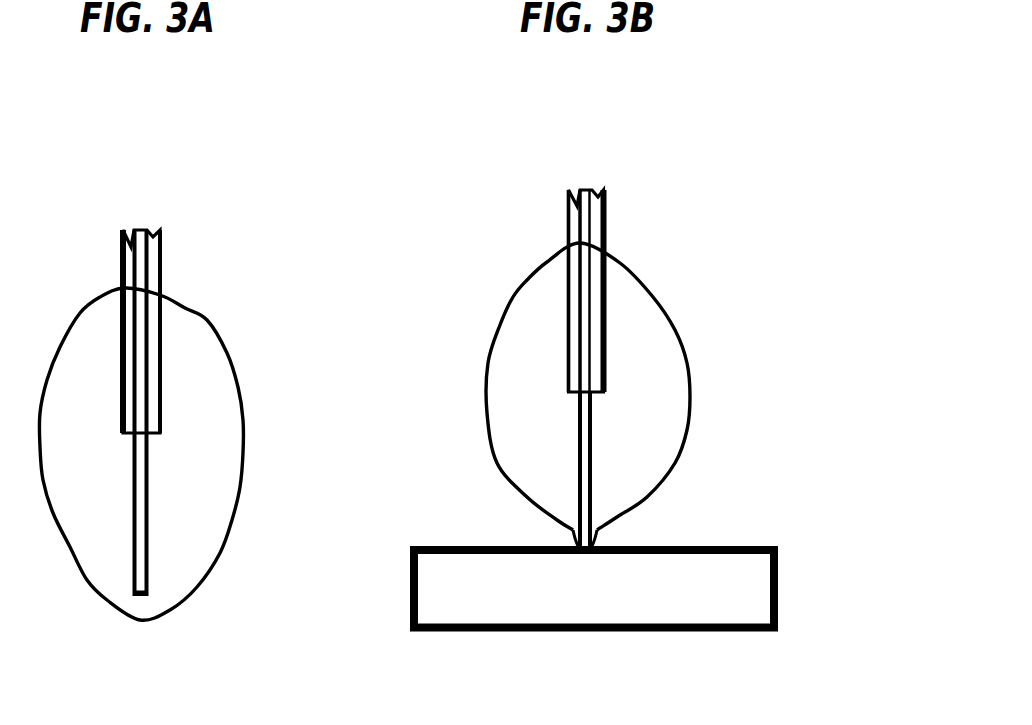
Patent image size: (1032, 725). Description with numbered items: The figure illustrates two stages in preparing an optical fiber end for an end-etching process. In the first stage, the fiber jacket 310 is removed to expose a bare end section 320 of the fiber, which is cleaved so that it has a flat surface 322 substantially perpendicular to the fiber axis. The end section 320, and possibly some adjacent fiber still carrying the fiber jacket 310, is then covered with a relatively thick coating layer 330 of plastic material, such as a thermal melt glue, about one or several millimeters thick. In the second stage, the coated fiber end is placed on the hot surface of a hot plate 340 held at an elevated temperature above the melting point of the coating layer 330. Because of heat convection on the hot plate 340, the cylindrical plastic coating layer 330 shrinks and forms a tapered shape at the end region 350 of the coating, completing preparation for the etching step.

In FIG. 3A, the fiber jacket 310 is at (163, 263).
In FIG. 3B, the fiber jacket 310 is at (567, 290).
In FIG. 3A, the end section 320 is at (145, 470).
In FIG. 3B, the end section 320 is at (577, 430).
In FIG. 3A, the flat surface 322 is at (145, 597).
In FIG. 3A, the coating layer 330 is at (203, 507).
In FIG. 3B, the coating layer 330 is at (532, 455).
In FIG. 3B, the hot plate 340 is at (723, 546).
In FIG. 3B, the end region 350 is at (597, 532).